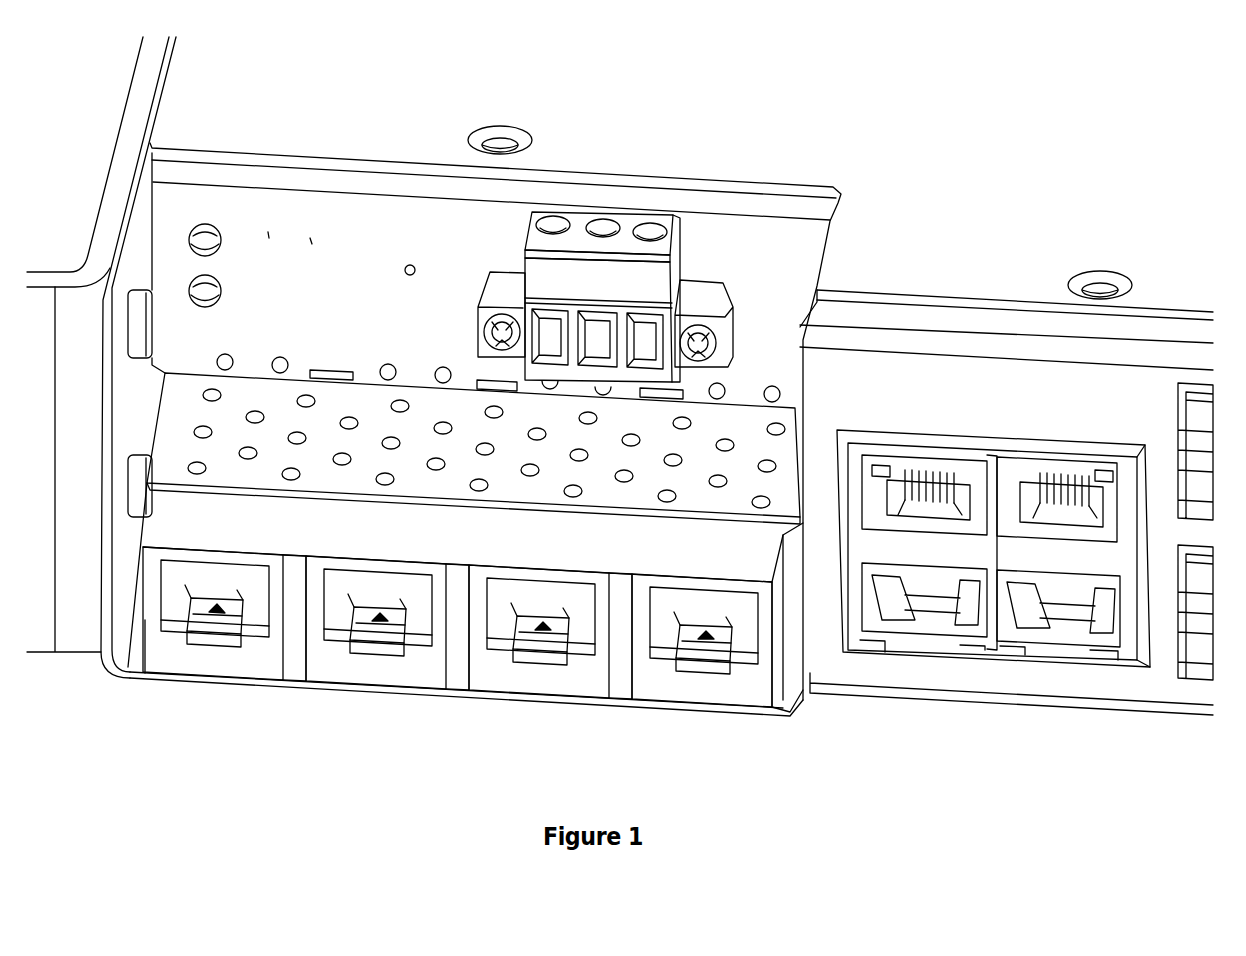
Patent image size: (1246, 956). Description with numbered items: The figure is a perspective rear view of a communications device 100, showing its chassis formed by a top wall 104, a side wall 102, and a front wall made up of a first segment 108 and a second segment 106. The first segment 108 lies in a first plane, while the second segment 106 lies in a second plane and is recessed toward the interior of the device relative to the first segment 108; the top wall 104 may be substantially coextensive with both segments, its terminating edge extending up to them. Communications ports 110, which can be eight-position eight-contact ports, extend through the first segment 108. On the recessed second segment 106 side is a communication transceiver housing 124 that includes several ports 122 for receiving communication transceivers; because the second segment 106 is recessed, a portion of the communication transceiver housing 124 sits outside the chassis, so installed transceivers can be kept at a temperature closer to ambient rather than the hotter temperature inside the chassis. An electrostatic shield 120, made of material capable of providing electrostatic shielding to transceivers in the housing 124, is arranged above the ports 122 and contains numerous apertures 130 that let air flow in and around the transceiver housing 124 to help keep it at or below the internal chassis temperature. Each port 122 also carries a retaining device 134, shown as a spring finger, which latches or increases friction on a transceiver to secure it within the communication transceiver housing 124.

The communications device 100 is at (898, 745).
The side wall 102 is at (112, 142).
The top wall 104 is at (317, 92).
The second segment 106 is at (297, 230).
The first segment 108 is at (932, 372).
The communications ports 110 is at (1060, 448).
The electrostatic shield 120 is at (473, 457).
The ports 122 is at (456, 646).
The communication transceiver housing 124 is at (466, 633).
The apertures 130 is at (290, 478).
The retaining device 134 is at (713, 645).